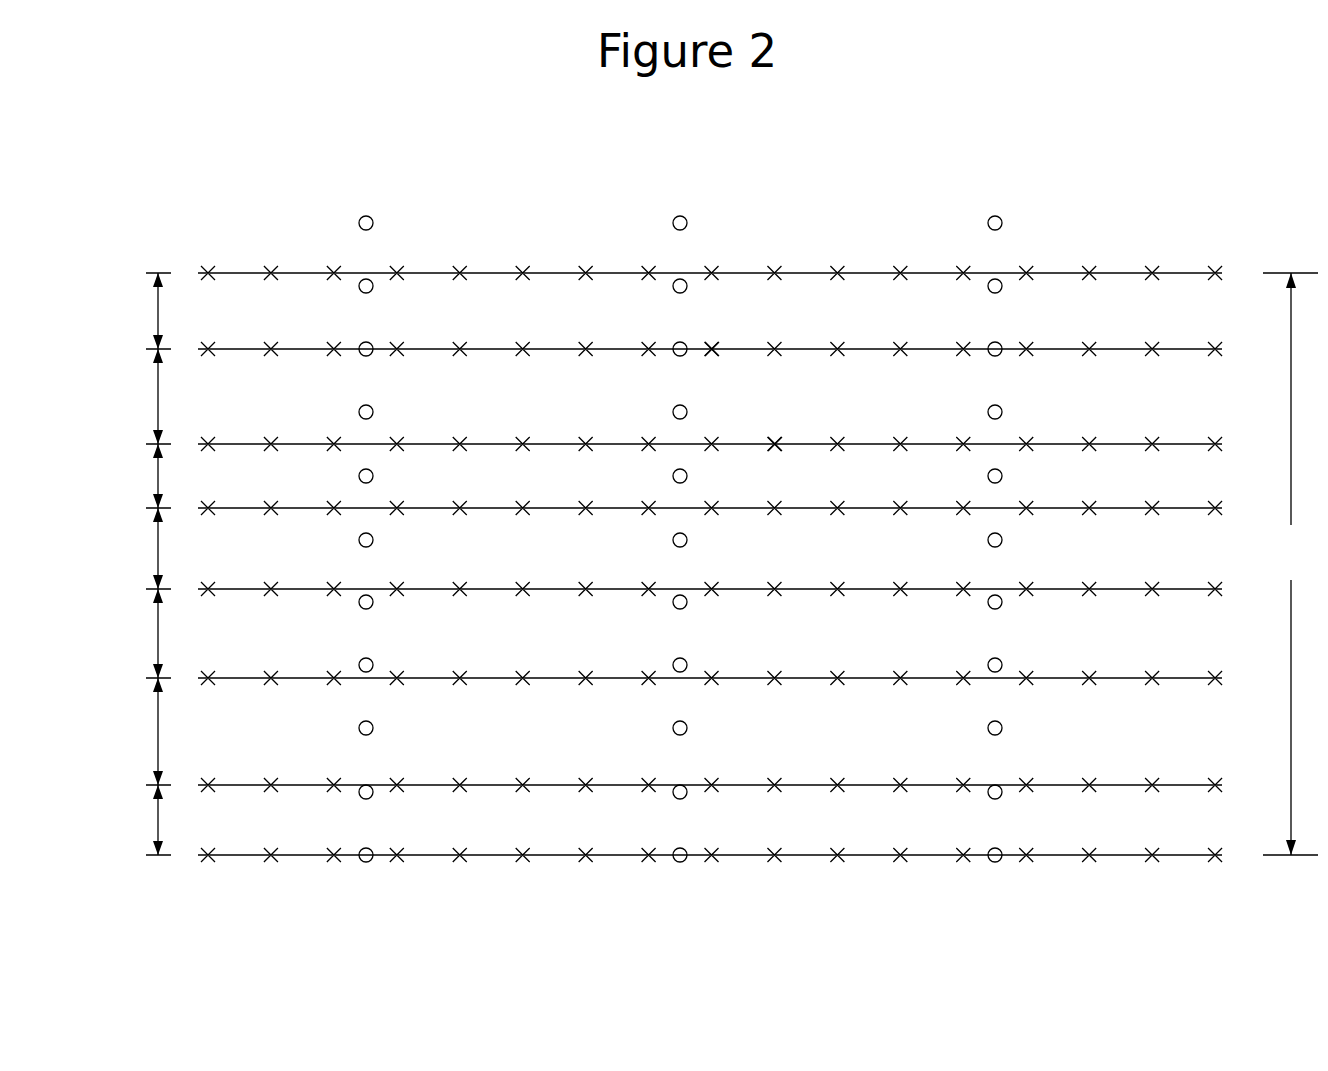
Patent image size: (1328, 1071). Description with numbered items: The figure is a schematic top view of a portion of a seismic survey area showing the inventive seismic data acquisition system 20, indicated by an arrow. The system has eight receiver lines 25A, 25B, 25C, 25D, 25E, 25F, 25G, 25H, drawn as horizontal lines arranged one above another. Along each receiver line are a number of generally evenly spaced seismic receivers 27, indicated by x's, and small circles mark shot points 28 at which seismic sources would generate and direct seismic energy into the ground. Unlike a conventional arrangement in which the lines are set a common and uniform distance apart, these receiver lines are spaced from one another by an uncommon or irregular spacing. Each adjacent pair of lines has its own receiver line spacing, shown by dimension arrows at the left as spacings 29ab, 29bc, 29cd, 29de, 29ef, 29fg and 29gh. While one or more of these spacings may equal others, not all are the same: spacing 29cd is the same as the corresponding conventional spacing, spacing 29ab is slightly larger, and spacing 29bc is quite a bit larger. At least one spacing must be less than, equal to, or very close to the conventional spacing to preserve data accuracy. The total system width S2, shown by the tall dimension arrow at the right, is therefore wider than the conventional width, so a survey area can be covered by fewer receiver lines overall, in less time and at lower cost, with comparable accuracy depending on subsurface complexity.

The seismic data acquisition system 20 is at (873, 214).
The receiver line 25A is at (428, 273).
The receiver line 25B is at (421, 349).
The receiver line 25C is at (428, 444).
The receiver line 25D is at (428, 508).
The receiver line 25E is at (428, 589).
The receiver line 25F is at (473, 678).
The receiver line 25G is at (423, 785).
The receiver line 25H is at (428, 855).
The seismic receiver 27 is at (712, 349).
The shot point 28 is at (687, 540).
The receiver line spacing 29ab is at (157, 310).
The receiver line spacing 29bc is at (157, 390).
The receiver line spacing 29cd is at (157, 467).
The receiver line spacing 29de is at (157, 536).
The receiver line spacing 29ef is at (157, 628).
The receiver line spacing 29fg is at (157, 722).
The receiver line spacing 29gh is at (157, 817).
The total system width S2 is at (1290, 564).